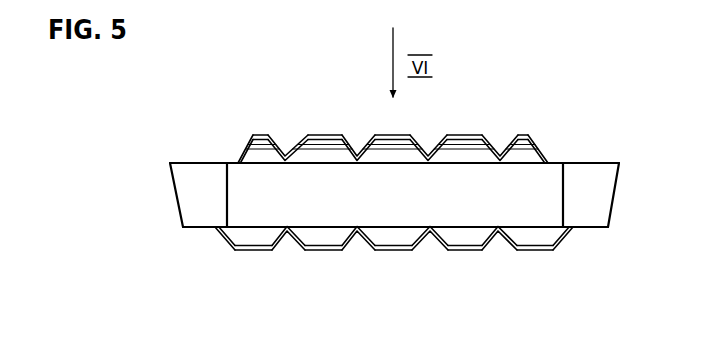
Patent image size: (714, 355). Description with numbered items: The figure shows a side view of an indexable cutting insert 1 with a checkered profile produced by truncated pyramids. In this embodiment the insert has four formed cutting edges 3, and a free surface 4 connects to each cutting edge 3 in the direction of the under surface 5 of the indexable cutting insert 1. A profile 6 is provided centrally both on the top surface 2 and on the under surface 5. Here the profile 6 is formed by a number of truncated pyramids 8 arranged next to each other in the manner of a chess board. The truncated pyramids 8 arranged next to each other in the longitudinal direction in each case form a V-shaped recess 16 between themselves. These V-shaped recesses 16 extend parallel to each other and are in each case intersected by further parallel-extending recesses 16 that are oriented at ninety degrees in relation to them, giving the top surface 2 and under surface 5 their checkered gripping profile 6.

The indexable cutting insert 1 is at (600, 84).
The top surface 2 is at (187, 158).
The cutting edge 3 is at (170, 162).
The free surface 4 is at (179, 207).
The under surface 5 is at (200, 232).
The profile 6 is at (394, 195).
The truncated pyramid 8 is at (262, 134).
The V-shaped recess 16 is at (293, 134).